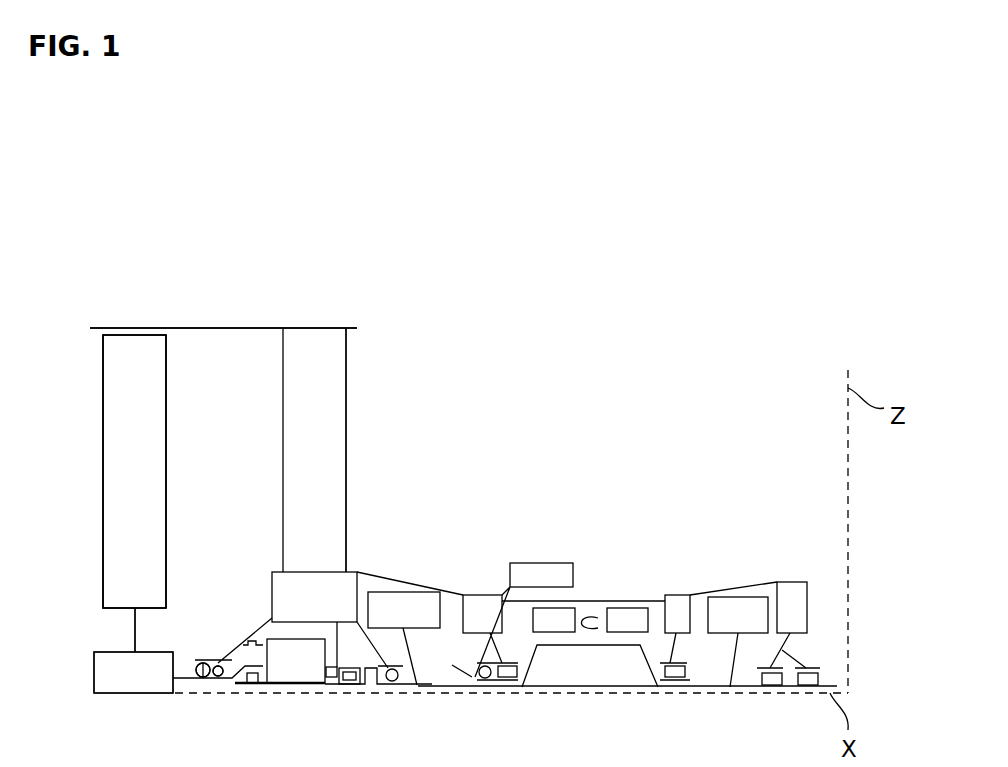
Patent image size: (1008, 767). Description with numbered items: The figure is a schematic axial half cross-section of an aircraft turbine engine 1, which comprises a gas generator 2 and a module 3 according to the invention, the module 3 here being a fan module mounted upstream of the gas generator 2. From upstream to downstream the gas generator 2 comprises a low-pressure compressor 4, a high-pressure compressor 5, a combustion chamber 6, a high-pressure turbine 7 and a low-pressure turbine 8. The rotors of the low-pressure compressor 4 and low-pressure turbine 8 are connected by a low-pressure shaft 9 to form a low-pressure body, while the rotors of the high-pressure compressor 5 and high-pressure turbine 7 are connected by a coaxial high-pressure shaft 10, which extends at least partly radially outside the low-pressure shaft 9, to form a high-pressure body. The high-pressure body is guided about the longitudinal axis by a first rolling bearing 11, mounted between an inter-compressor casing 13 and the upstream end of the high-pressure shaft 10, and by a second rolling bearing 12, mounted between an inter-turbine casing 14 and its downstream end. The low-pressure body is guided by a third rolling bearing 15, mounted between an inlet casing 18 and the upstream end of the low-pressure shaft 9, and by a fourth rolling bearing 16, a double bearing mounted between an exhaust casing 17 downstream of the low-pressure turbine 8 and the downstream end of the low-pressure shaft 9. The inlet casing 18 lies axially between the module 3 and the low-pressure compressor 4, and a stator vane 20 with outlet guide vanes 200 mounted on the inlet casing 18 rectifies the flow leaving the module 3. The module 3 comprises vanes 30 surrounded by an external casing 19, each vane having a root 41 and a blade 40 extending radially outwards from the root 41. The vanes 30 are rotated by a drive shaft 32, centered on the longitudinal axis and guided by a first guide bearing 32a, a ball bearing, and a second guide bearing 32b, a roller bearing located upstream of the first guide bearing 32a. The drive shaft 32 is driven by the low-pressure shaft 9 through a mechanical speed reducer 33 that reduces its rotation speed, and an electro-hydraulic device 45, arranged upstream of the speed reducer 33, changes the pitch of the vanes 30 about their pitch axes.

The turbine engine 1 is at (546, 344).
The gas generator 2 is at (599, 518).
The module 3 is at (84, 573).
The low-pressure compressor 4 is at (417, 610).
The high-pressure compressor 5 is at (562, 610).
The combustion chamber 6 is at (597, 611).
The high-pressure turbine 7 is at (630, 612).
The low-pressure turbine 8 is at (722, 602).
The low-pressure shaft 9 is at (612, 688).
The high-pressure shaft 10 is at (522, 667).
The first rolling bearing 11 is at (483, 677).
The second rolling bearing 12 is at (672, 677).
The inter-compressor casing 13 is at (475, 595).
The inter-turbine casing 14 is at (677, 603).
The third rolling bearing 15 is at (392, 686).
The fourth rolling bearing 16 is at (807, 686).
The exhaust casing 17 is at (795, 594).
The inlet casing 18 is at (348, 583).
The external casing 19 is at (200, 328).
The stator vane 20 is at (362, 390).
The vanes 200 is at (347, 462).
The vanes 30 is at (84, 469).
The drive shaft 32 is at (220, 678).
The first guide bearing 32a is at (217, 665).
The second guide bearing 32b is at (205, 663).
The mechanical speed reducer 33 is at (303, 672).
The blade 40 is at (107, 518).
The root 41 is at (132, 615).
The pitch change device 45 is at (110, 673).